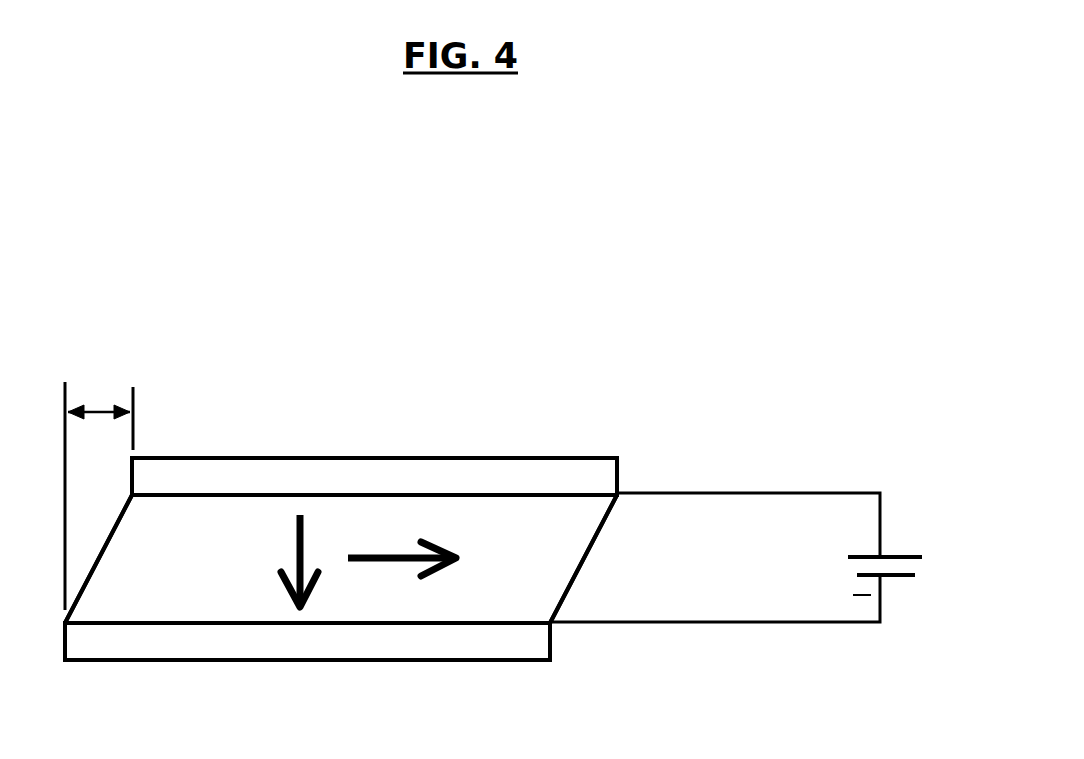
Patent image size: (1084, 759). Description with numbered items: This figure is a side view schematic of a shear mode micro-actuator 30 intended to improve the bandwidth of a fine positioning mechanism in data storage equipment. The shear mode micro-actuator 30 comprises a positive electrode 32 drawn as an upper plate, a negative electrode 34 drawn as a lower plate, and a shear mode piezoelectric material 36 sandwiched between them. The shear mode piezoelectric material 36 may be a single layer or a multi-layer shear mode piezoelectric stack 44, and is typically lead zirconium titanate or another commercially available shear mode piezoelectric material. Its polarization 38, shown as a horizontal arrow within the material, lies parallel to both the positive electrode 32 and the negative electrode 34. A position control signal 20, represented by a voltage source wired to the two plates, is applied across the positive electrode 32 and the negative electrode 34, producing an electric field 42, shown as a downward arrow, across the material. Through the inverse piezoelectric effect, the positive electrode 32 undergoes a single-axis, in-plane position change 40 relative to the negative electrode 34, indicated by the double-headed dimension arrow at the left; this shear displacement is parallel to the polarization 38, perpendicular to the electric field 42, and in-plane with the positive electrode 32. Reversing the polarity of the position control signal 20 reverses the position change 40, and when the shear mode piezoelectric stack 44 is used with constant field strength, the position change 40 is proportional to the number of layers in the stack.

The position control signal 20 is at (948, 540).
The shear mode micro-actuator 30 is at (270, 215).
The positive electrode 32 is at (582, 477).
The negative electrode 34 is at (530, 642).
The shear mode piezoelectric material 36 is at (548, 560).
The polarization 38 is at (390, 558).
The in-plane position change 40 is at (95, 410).
The electric field 42 is at (297, 538).
The shear mode piezoelectric stack 44 is at (636, 560).